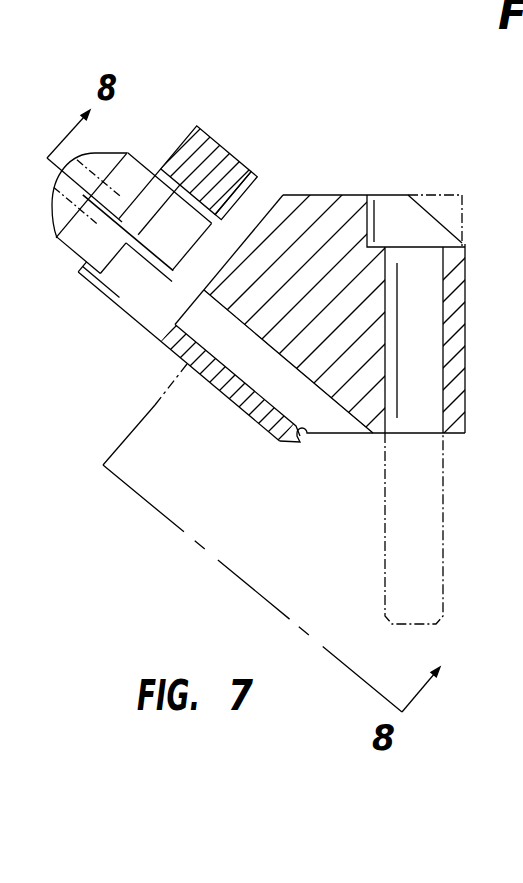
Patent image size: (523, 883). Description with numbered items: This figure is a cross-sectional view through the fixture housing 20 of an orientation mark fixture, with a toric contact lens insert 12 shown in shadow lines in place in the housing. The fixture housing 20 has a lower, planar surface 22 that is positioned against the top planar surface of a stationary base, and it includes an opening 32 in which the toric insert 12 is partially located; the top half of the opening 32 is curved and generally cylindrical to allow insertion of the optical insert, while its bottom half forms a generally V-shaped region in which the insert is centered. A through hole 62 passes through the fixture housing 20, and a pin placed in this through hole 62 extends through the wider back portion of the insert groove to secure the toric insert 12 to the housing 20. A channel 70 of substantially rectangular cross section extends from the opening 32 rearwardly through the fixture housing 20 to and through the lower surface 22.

The toric contact lens insert 12 is at (47, 254).
The fixture housing 20 is at (359, 178).
The lower planar surface 22 is at (345, 433).
The opening 32 is at (193, 203).
The through hole 62 is at (237, 186).
The channel 70 is at (289, 391).